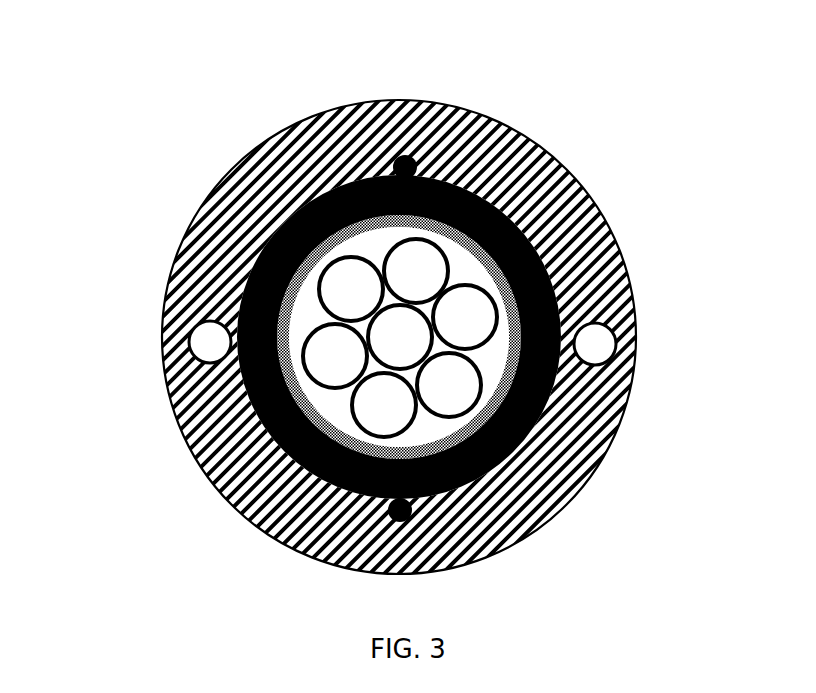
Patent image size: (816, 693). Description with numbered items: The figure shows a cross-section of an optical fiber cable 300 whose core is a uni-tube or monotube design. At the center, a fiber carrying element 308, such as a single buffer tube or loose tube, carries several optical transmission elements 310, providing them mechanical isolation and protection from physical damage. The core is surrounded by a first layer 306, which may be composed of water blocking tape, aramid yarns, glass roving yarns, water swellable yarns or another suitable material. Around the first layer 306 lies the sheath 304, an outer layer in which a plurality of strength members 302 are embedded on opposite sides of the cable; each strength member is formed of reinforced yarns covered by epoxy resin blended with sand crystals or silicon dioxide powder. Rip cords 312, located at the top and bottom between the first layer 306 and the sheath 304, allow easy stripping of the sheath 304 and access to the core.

The optical fiber cable 300 is at (408, 297).
The strength members 302 is at (210, 343).
The sheath 304 is at (560, 444).
The first layer 306 is at (530, 238).
The fiber carrying element 308 is at (505, 299).
The optical transmission elements 310 is at (342, 285).
The rip cords 312 is at (412, 163).